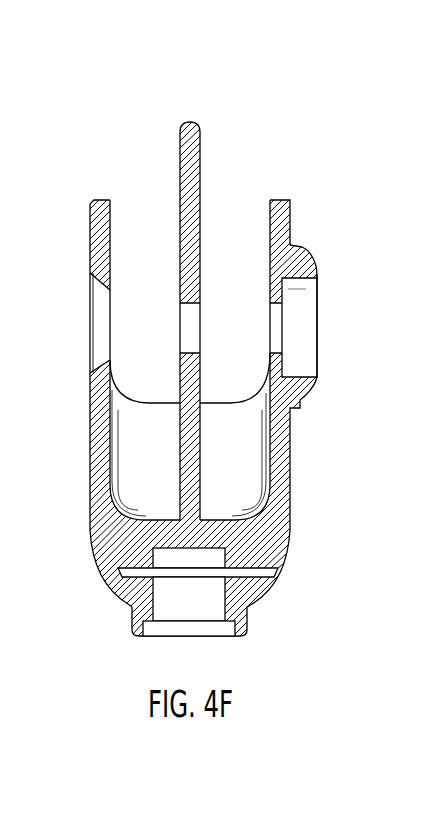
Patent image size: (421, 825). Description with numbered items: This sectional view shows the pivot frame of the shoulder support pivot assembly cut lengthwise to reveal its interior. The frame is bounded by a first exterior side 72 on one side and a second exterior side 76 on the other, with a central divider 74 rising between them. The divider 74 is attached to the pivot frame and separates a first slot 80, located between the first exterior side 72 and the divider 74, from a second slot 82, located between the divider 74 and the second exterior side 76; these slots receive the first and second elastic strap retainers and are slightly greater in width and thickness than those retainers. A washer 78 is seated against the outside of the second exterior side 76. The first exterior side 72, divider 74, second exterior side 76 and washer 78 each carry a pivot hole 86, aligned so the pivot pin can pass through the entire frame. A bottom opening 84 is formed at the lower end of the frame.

The first exterior side 72 is at (90, 478).
The divider 74 is at (190, 122).
The second exterior side 76 is at (290, 470).
The washer 78 is at (298, 250).
The first slot 80 is at (132, 178).
The second slot 82 is at (245, 180).
The bottom opening 84 is at (161, 636).
The pivot hole 86 is at (100, 314).